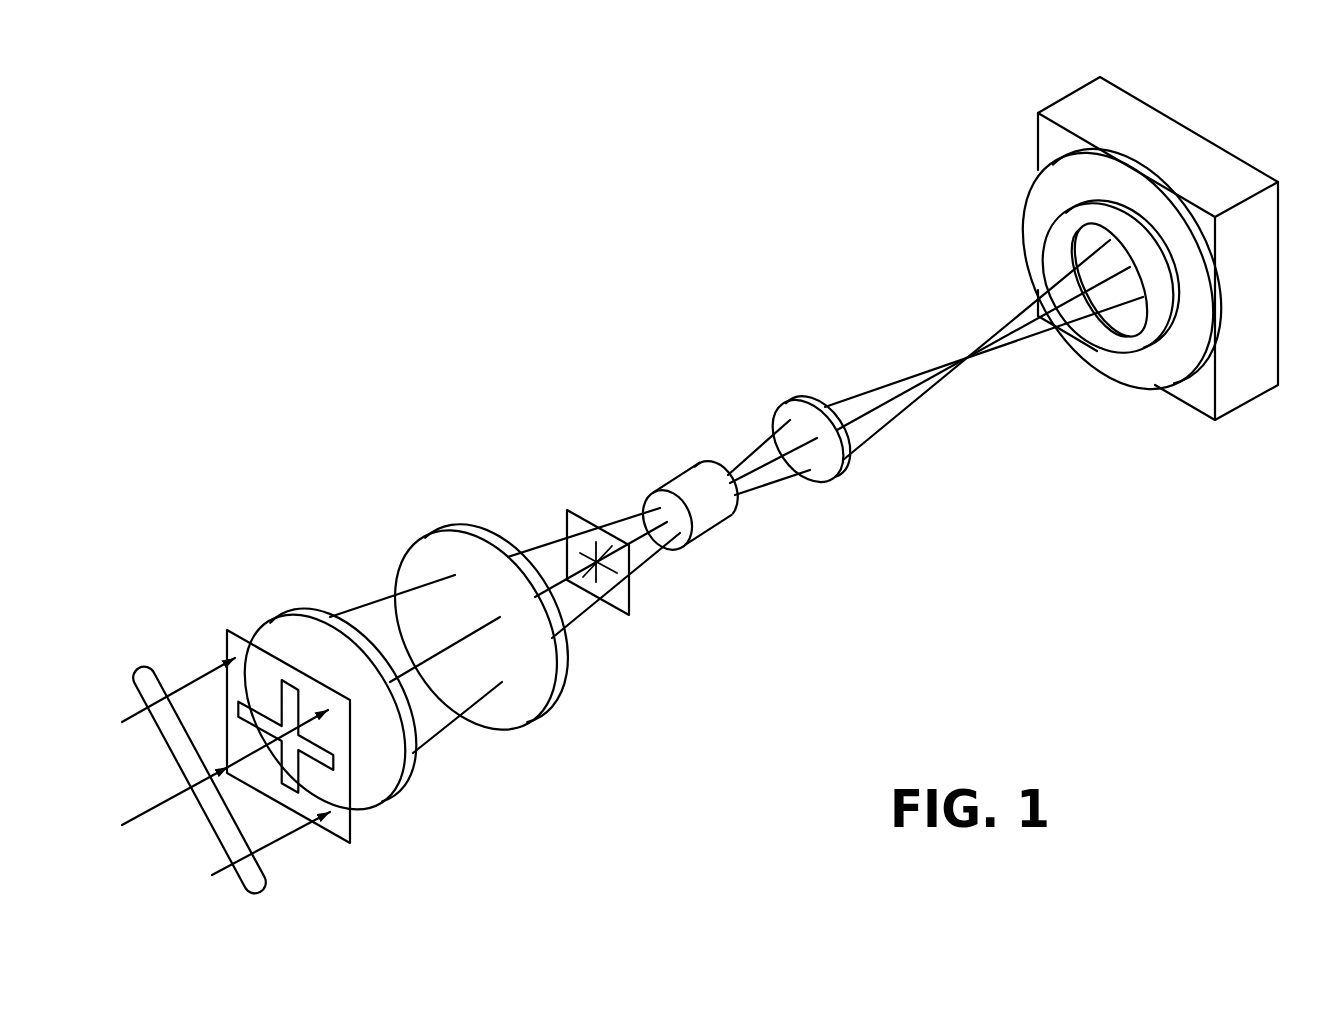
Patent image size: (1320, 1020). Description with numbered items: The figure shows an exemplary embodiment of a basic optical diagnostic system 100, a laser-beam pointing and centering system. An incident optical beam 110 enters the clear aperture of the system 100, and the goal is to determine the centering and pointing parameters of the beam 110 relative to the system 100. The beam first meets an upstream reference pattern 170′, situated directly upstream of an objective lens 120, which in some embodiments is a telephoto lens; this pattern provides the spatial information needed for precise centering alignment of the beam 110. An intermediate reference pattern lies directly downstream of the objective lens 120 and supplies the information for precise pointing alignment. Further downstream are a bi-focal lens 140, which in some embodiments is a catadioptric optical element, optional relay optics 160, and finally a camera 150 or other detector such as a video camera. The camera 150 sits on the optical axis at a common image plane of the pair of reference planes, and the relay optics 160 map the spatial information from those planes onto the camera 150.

The optical diagnostic system 100 is at (424, 344).
The optical beam 110 is at (133, 664).
The upstream reference pattern 170′ is at (266, 548).
The objective lens 120 is at (562, 724).
The bi-focal lens 140 is at (715, 515).
The relay optics 160 is at (817, 397).
The camera 150 is at (1205, 395).